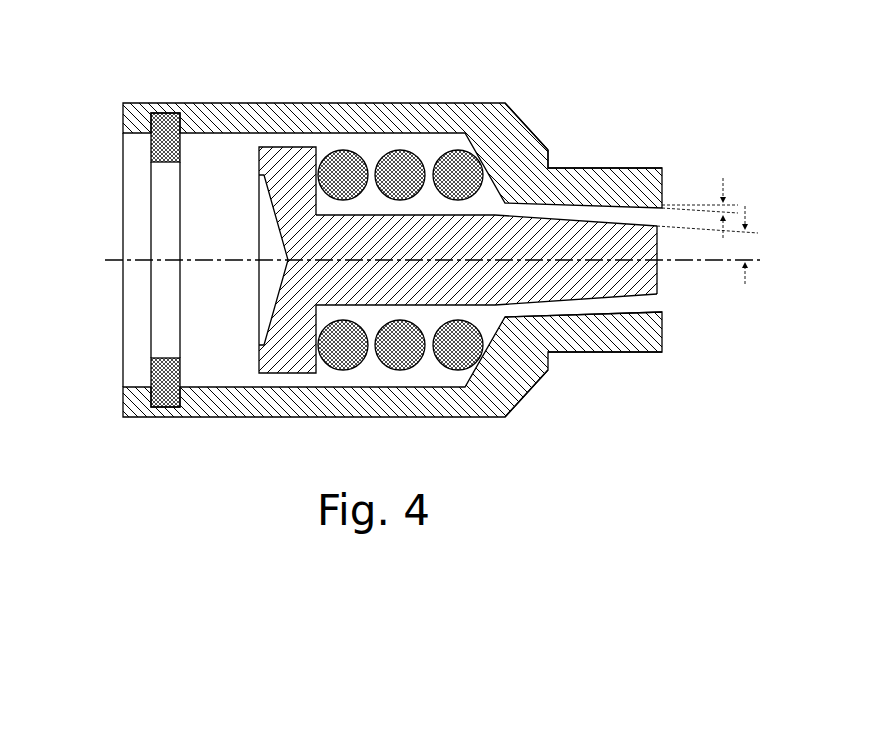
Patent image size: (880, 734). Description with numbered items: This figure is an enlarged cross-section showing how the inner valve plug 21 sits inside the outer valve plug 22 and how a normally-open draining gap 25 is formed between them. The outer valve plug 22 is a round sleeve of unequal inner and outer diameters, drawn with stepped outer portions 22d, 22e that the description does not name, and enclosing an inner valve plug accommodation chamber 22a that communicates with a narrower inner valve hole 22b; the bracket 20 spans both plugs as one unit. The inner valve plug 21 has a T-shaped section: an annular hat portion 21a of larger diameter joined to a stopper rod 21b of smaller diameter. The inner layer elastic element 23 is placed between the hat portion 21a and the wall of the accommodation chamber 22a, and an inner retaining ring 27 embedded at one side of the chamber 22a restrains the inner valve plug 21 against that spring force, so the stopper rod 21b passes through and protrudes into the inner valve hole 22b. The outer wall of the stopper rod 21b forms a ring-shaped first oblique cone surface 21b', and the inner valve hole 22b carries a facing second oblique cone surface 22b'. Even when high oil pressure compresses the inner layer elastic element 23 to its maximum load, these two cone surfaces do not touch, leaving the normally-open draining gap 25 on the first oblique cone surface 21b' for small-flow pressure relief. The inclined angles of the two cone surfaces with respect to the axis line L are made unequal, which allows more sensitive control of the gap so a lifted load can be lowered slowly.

The nozzle assembly 20 is at (308, 33).
The inner valve plug 21 is at (370, 237).
The hat portion 21a is at (292, 158).
The stopper rod 21b is at (576, 318).
The first oblique cone surface 21b' is at (674, 324).
The outer valve plug 22 is at (318, 118).
The inner valve plug accommodation chamber 22a is at (222, 363).
The inner valve hole 22b is at (513, 423).
The second oblique cone surface 22b' is at (637, 335).
The nozzle step 22d is at (550, 156).
The inclined shoulder surface 22e is at (533, 133).
The inner layer elastic element 23 is at (458, 160).
The normally-open draining gap 25 is at (558, 314).
The inner retaining ring 27 is at (152, 368).
The axis line L is at (115, 258).